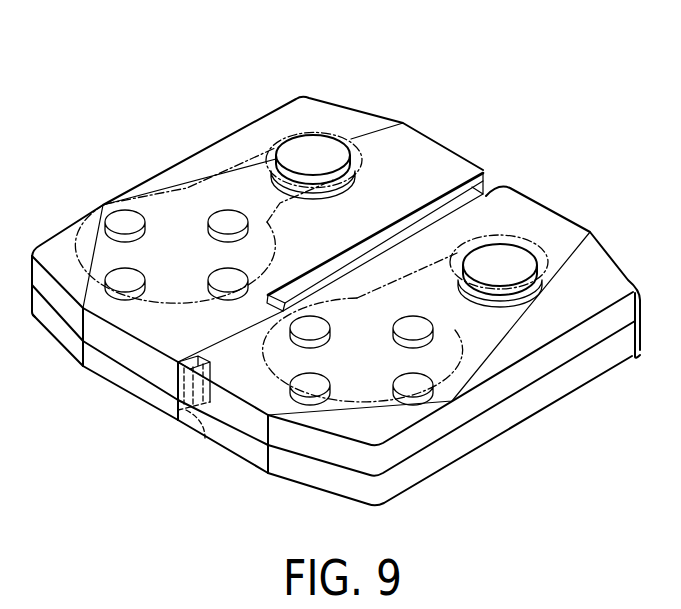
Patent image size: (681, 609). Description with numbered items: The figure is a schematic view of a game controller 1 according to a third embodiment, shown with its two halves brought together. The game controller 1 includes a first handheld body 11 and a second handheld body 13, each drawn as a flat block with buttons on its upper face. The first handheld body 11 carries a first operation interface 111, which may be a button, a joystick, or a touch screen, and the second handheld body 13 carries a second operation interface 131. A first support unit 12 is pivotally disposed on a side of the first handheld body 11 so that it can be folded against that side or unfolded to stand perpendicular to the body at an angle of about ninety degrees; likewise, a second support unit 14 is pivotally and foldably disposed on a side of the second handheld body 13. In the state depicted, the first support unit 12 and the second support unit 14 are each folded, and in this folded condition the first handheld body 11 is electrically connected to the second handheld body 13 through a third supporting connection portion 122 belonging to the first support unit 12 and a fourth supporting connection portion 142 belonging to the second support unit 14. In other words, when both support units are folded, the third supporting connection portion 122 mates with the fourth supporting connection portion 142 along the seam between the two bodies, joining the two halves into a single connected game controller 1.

The game controller 1 is at (336, 268).
The first handheld body 11 is at (409, 327).
The first operation interface 111 is at (455, 330).
The first support unit 12 is at (460, 213).
The third supporting connection portion 122 is at (200, 415).
The second handheld body 13 is at (257, 252).
The second operation interface 131 is at (258, 153).
The second support unit 14 is at (445, 203).
The fourth supporting connection portion 142 is at (178, 380).